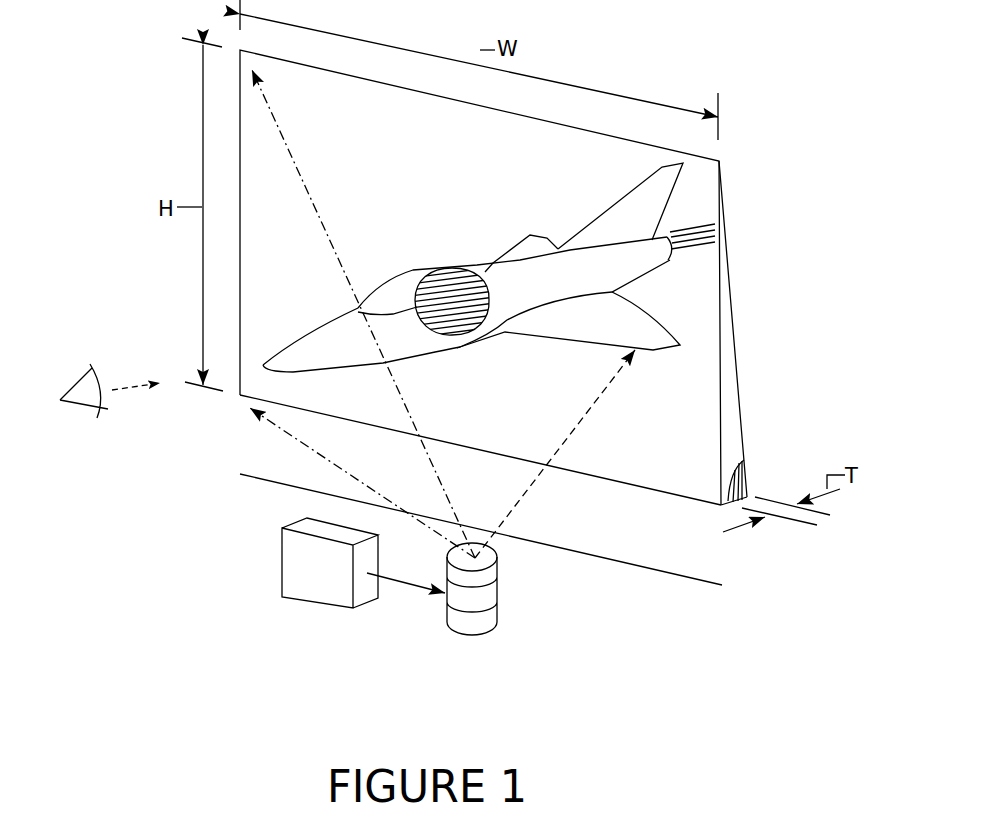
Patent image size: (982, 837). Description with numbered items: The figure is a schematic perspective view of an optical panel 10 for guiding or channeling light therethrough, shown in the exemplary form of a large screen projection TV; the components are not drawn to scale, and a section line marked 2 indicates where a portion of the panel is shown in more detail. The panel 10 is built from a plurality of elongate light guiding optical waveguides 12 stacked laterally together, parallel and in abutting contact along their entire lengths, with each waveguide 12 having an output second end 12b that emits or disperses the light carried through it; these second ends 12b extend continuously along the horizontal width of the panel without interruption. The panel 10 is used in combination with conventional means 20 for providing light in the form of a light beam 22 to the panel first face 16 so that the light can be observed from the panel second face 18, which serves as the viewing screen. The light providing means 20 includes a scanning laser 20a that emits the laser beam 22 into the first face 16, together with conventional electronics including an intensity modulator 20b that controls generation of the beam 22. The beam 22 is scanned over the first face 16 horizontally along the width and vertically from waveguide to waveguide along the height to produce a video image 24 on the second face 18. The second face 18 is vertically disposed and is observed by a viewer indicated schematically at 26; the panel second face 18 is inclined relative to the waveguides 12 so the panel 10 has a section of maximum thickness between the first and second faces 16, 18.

The section line for FIG. 2 is at (828, 213).
The optical panel 10 is at (733, 303).
The optical waveguide 12 is at (747, 475).
The second end of waveguide 12b is at (438, 282).
The panel first face 16 is at (713, 505).
The panel second face 18 is at (600, 455).
The means for providing light 20 is at (394, 616).
The scanning laser 20a is at (483, 622).
The intensity modulator 20b is at (305, 598).
The light beam 22 is at (400, 505).
The video image 24 is at (322, 315).
The observer 26 is at (77, 402).